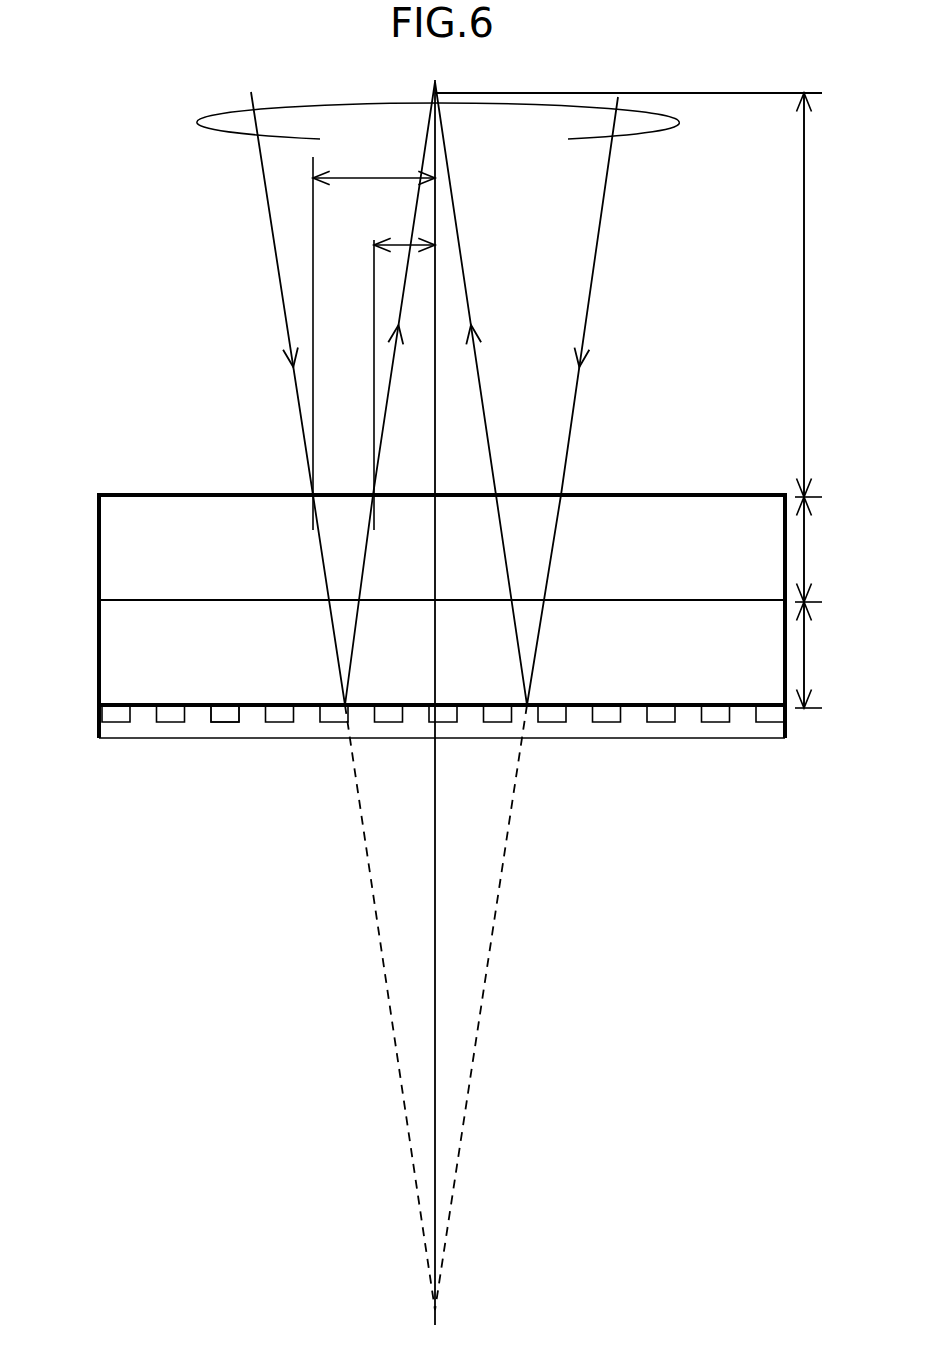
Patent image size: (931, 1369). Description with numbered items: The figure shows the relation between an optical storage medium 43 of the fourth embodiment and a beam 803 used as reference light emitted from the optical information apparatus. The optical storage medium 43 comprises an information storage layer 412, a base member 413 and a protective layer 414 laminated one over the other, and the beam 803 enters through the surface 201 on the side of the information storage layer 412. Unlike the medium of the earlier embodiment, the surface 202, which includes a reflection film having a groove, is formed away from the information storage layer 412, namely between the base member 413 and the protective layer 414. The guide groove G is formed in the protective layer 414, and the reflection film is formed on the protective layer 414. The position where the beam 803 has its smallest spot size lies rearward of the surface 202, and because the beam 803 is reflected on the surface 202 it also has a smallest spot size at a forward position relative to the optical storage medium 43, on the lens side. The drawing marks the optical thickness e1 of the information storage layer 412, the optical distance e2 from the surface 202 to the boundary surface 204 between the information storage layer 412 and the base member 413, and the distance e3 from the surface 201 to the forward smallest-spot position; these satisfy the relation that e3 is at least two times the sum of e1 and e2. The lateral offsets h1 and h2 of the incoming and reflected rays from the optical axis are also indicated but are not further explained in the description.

The beam 803 is at (213, 132).
The optical storage medium 43 is at (240, 493).
The information storage layer 412 is at (190, 519).
The surface 201 is at (118, 493).
The boundary surface 204 is at (122, 598).
The surface 202 is at (113, 703).
The base member 413 is at (190, 682).
The guide groove G is at (220, 723).
The protective layer 414 is at (255, 727).
The beam height h1 is at (374, 339).
The beam height h2 is at (404, 371).
The optical thickness of the information storage layer e1 is at (824, 549).
The optical distance from the surface to the boundary surface e2 is at (824, 655).
The distance from the surface to the forward smallest-spot position e3 is at (824, 295).